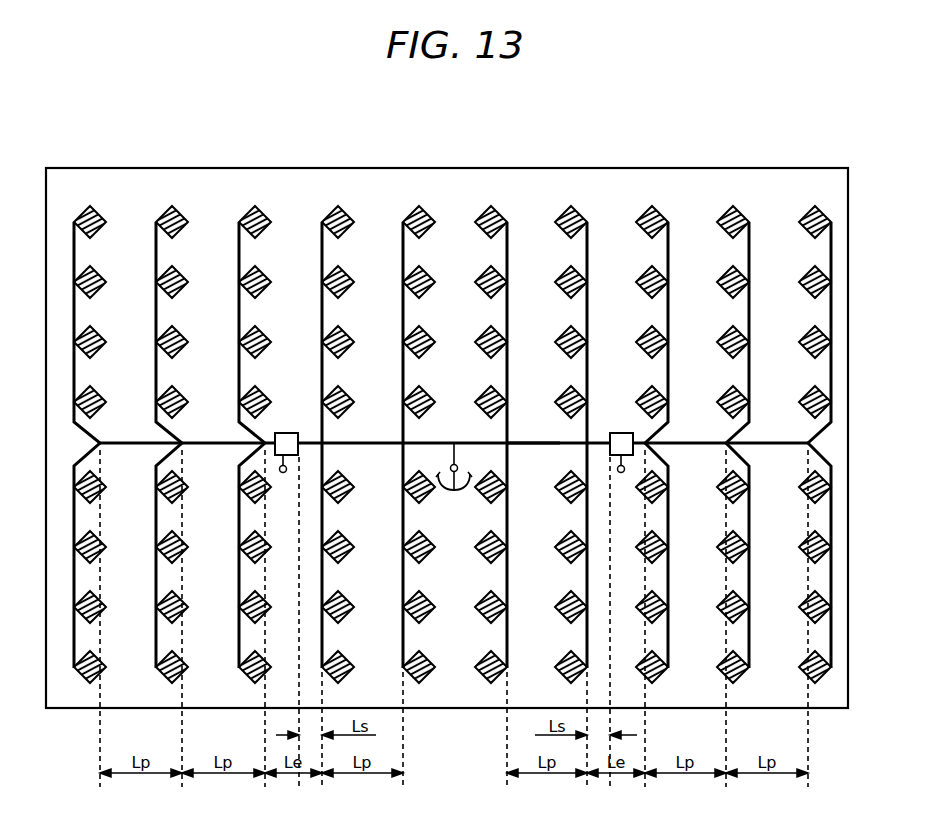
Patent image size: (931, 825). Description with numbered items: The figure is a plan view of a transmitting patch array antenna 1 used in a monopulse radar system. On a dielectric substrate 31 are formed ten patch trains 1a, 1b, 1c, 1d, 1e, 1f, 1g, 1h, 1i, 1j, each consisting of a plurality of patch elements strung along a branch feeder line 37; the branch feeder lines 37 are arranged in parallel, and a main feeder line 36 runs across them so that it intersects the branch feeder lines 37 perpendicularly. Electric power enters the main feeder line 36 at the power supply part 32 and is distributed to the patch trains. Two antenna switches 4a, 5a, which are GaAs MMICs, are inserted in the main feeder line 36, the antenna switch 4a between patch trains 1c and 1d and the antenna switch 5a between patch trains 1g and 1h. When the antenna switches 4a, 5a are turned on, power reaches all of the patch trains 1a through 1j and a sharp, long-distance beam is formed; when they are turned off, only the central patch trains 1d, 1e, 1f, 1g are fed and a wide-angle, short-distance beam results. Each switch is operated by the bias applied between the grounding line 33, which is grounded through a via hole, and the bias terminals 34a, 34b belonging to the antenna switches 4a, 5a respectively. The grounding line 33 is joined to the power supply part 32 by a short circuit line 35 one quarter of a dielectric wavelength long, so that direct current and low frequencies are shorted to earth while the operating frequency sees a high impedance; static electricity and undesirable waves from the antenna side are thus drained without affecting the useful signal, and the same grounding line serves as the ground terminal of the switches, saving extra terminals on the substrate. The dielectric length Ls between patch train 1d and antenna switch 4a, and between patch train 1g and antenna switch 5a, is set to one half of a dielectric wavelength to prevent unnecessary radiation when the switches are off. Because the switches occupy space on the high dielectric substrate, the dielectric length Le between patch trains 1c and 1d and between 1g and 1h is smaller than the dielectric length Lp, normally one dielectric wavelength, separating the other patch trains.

The patch array antenna 1 is at (454, 281).
The patch train 1a is at (90, 485).
The patch train 1b is at (172, 485).
The patch train 1c is at (255, 485).
The patch train 1d is at (338, 485).
The patch train 1e is at (419, 485).
The patch train 1f is at (491, 485).
The patch train 1g is at (571, 485).
The patch train 1h is at (652, 485).
The patch train 1i is at (733, 485).
The patch train 1j is at (815, 485).
The dielectric substrate 31 is at (765, 170).
The branch feeder line 37 is at (78, 316).
The antenna switch 4a is at (283, 433).
The antenna switch 5a is at (619, 433).
The bias terminal 34a is at (283, 473).
The bias terminal 34b is at (621, 473).
The power supply part 32 is at (441, 444).
The grounding line 33 is at (443, 492).
The short circuit line 35 is at (466, 492).
The main feeder line 36 is at (525, 446).